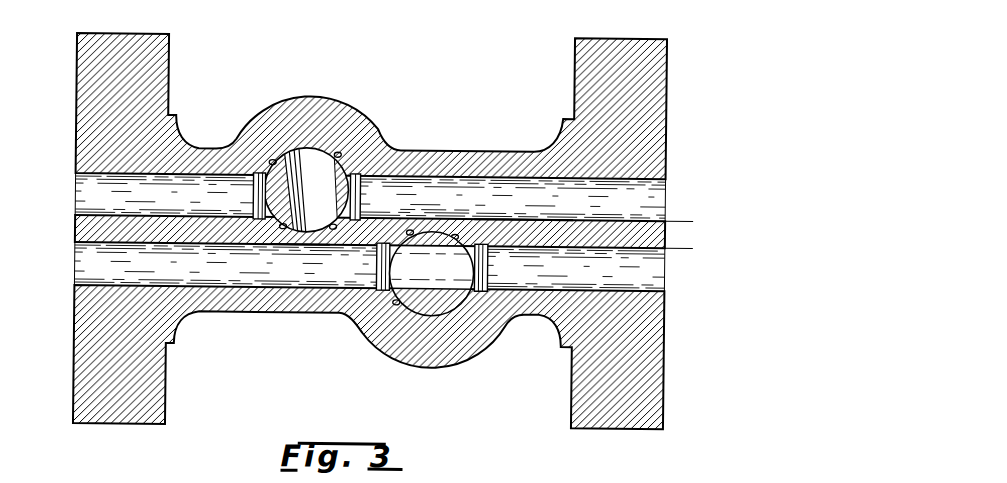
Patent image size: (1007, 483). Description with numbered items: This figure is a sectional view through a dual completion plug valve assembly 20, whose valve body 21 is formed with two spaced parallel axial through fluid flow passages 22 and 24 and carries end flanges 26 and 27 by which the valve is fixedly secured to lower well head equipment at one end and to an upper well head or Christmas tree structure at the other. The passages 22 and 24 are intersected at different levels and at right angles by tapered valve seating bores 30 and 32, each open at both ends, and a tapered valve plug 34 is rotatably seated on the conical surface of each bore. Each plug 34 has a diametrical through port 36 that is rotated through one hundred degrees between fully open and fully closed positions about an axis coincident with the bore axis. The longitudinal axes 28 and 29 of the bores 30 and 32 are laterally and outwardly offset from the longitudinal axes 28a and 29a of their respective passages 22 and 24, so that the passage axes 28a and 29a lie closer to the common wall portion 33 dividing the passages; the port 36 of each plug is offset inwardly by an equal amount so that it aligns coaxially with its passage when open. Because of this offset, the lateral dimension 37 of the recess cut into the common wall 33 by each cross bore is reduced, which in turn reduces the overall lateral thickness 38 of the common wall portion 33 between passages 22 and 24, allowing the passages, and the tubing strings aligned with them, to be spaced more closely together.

The dual completion plug valve assembly 20 is at (366, 231).
The valve body 21 is at (486, 159).
The fluid flow passage 22 is at (666, 176).
The fluid flow passage 24 is at (666, 286).
The end flange 26 is at (666, 66).
The end flange 27 is at (75, 50).
The longitudinal axis of bore 28 is at (365, 228).
The longitudinal axis of fluid flow passage 28a is at (415, 195).
The longitudinal axis of bore 29 is at (431, 283).
The longitudinal axis of fluid flow passage 29a is at (356, 208).
The tapered valve seating bore 30 is at (293, 238).
The tapered valve seating bore 32 is at (420, 307).
The common wall portion 33 is at (553, 225).
The tapered valve plug 34 is at (279, 156).
The diametrical through port 36 is at (446, 316).
The lateral dimension of recess 37 is at (494, 225).
The lateral thickness of common wall portion 38 is at (681, 203).